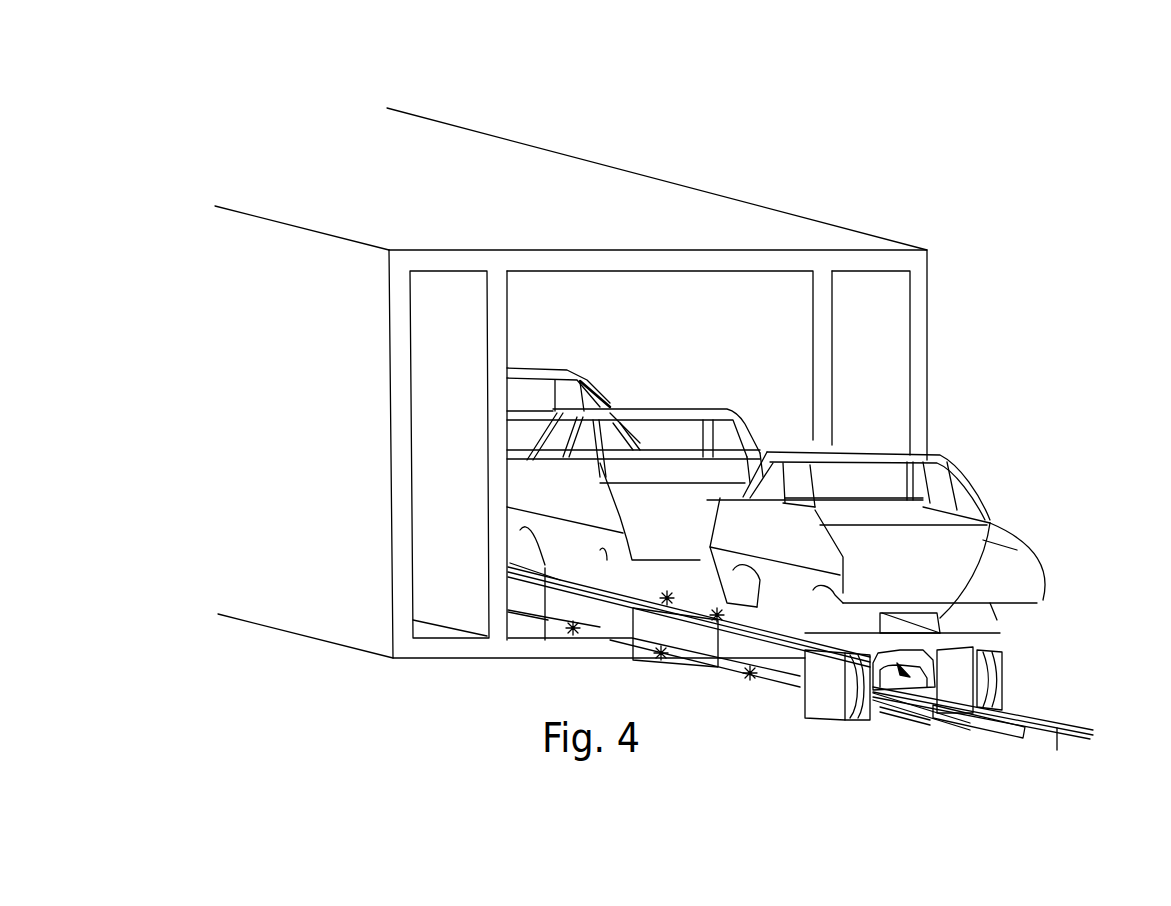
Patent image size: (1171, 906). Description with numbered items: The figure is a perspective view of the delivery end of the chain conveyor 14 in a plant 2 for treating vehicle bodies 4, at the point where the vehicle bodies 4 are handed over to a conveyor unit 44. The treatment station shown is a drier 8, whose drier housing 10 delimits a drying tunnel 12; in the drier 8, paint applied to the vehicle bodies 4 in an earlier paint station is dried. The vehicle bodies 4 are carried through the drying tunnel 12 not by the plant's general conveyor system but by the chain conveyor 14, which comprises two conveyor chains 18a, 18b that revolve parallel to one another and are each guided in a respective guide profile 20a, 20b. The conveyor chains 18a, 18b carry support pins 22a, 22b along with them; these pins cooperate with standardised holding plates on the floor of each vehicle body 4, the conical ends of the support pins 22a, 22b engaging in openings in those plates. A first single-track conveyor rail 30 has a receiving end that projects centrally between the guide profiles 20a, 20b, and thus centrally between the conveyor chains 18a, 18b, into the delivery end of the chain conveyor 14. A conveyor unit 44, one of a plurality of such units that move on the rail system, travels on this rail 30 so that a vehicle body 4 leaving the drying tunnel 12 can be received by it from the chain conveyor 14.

The plant 2 is at (907, 120).
The vehicle body 4 is at (1013, 555).
The drier 8 is at (495, 168).
The drier housing 10 is at (612, 200).
The drying tunnel 12 is at (810, 303).
The chain conveyor 14 is at (768, 717).
The conveyor chain 18a is at (633, 630).
The conveyor chain 18b is at (983, 640).
The guide profile 20a is at (707, 643).
The guide profile 20b is at (700, 573).
The support pin 22a is at (612, 603).
The support pin 22b is at (983, 553).
The first single-track conveyor rail 30 is at (1057, 743).
The conveyor unit 44 is at (922, 698).